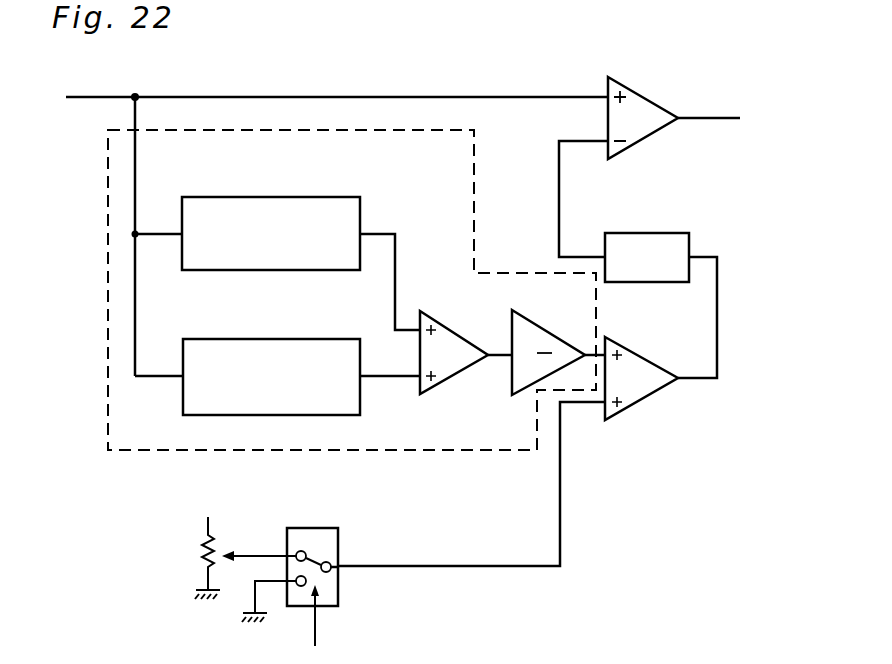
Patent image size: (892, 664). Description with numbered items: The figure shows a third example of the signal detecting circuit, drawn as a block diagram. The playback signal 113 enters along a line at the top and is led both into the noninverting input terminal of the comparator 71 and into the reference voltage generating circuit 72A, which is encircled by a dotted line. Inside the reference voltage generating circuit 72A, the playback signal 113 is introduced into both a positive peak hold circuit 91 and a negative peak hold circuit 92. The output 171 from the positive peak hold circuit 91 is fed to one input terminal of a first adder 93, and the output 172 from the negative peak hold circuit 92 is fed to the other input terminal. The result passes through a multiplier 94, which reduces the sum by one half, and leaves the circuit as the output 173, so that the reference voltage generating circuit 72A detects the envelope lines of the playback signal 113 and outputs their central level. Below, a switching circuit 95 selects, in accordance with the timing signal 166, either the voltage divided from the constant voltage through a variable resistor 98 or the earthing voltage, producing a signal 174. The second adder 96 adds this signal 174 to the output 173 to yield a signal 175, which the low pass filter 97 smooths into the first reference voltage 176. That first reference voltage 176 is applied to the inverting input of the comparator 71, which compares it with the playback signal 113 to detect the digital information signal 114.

The playback signal 113 is at (118, 97).
The digital information signal 114 is at (712, 118).
The comparator 71 is at (648, 98).
The reference voltage generating circuit 72A is at (465, 452).
The positive peak hold circuit 91 is at (253, 197).
The negative peak hold circuit 92 is at (247, 339).
The first adder 93 is at (450, 323).
The multiplier 94 is at (540, 322).
The switching circuit 95 is at (318, 528).
The second adder 96 is at (650, 395).
The low pass filter 97 is at (657, 233).
The variable resistor 98 is at (208, 556).
The timing signal 166 is at (315, 625).
The output from the positive peak hold circuit 171 is at (390, 234).
The output from the negative peak hold circuit 172 is at (386, 378).
The output from the reference voltage generating circuit 173 is at (592, 352).
The signal 174 is at (560, 508).
The signal 175 is at (717, 332).
The first reference voltage 176 is at (558, 180).